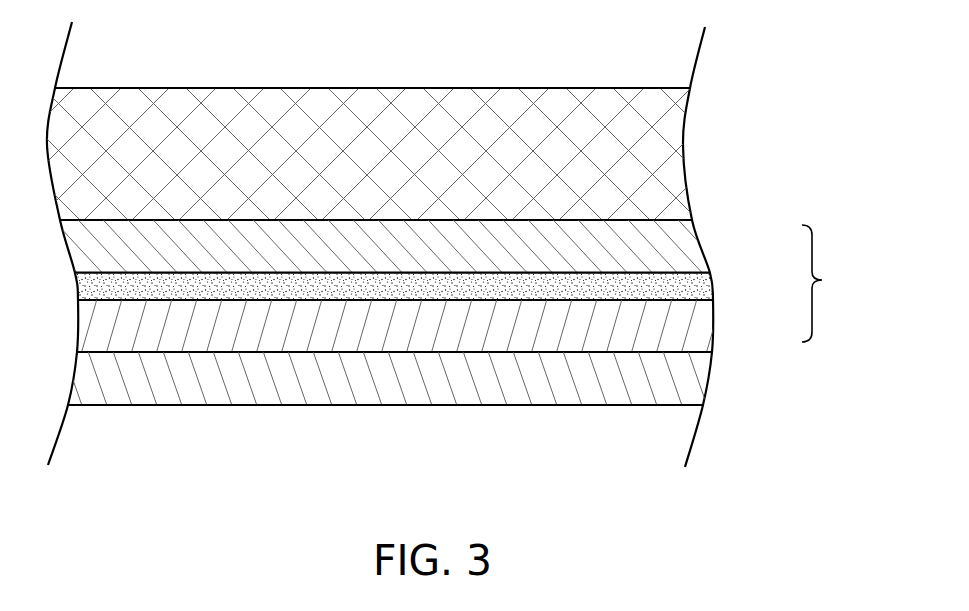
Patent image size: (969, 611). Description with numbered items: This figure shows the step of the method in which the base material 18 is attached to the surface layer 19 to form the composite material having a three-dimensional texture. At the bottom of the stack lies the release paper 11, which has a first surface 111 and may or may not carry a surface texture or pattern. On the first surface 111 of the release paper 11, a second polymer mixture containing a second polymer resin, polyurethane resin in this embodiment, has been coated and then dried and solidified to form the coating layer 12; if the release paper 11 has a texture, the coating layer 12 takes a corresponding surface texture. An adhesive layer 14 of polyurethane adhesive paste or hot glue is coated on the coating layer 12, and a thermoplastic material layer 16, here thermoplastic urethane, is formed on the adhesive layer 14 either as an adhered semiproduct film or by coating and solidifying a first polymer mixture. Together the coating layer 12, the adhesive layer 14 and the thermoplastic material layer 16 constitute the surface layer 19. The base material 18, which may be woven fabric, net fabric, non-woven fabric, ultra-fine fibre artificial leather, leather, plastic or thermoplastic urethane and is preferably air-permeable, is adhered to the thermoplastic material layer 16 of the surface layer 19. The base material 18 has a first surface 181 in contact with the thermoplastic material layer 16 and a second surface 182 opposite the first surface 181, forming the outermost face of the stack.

The release paper 11 is at (690, 380).
The first surface 111 is at (692, 352).
The coating layer 12 is at (683, 318).
The adhesive layer 14 is at (683, 282).
The thermoplastic material layer 16 is at (683, 238).
The base material 18 is at (663, 148).
The first surface 181 is at (699, 230).
The second surface 182 is at (668, 87).
The surface layer 19 is at (830, 283).